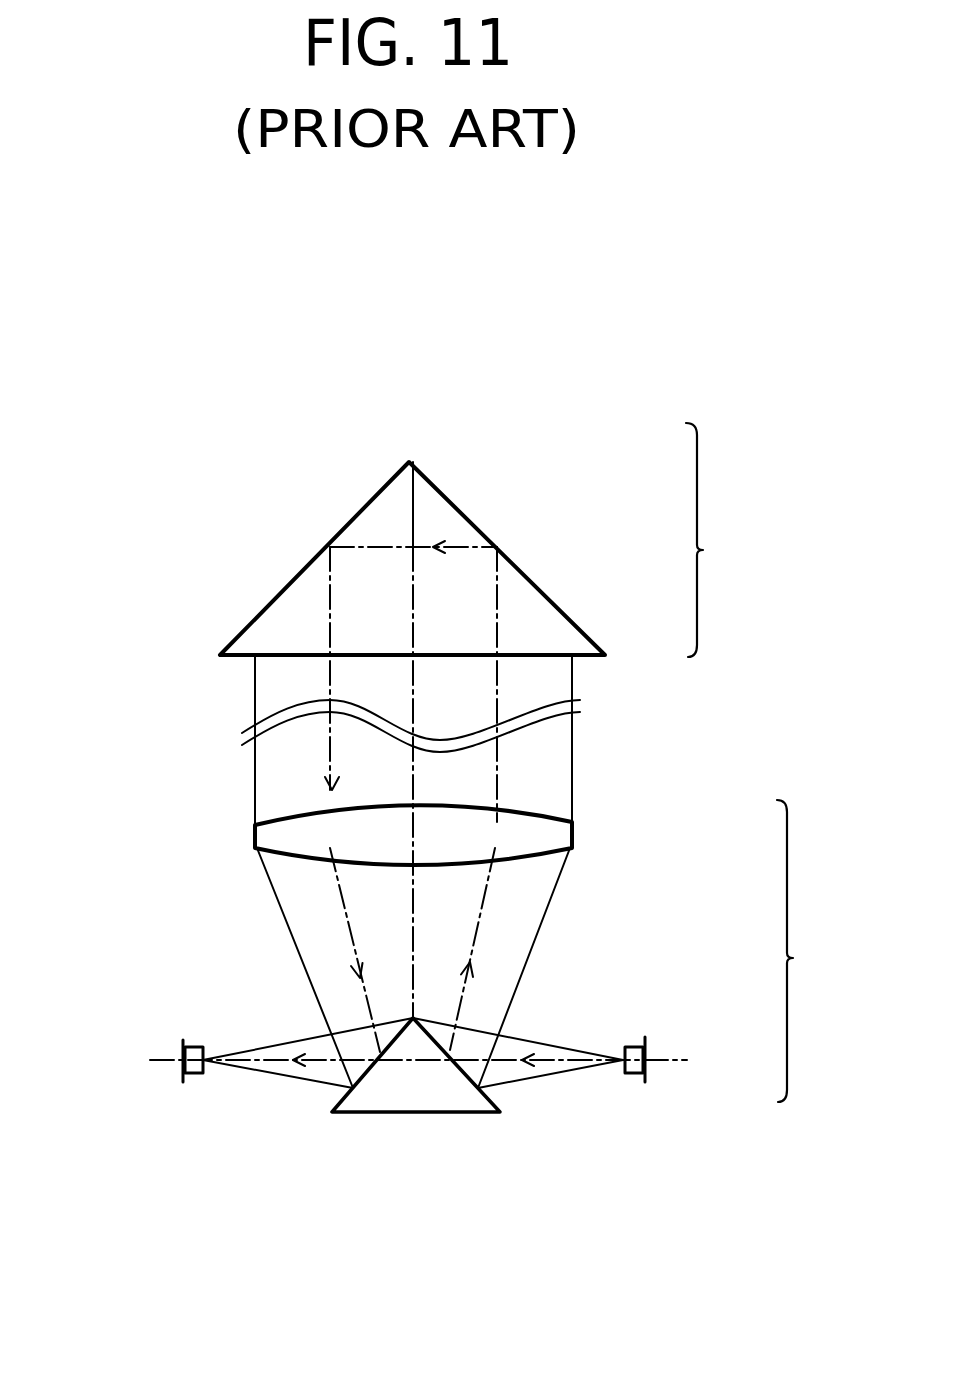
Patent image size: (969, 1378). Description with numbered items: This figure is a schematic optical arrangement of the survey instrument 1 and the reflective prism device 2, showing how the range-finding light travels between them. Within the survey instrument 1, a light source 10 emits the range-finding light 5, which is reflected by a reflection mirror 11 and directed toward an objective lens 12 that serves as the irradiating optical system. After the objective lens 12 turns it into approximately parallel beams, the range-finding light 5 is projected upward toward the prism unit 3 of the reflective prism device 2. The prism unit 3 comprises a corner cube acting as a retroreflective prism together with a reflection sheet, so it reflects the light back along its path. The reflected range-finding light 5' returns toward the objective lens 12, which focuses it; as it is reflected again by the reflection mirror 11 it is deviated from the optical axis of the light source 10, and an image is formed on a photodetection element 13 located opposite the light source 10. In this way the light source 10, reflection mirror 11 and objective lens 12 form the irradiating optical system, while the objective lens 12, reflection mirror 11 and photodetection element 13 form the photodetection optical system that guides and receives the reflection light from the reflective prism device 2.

The survey instrument 1 is at (793, 958).
The reflective prism device 2 is at (703, 550).
The prism unit 3 is at (545, 620).
The range-finding light 5 is at (610, 798).
The reflected range-finding light 5' is at (230, 799).
The light source 10 is at (628, 1047).
The reflection mirror 11 is at (419, 1100).
The objective lens 12 is at (545, 838).
The photodetection element 13 is at (197, 1047).